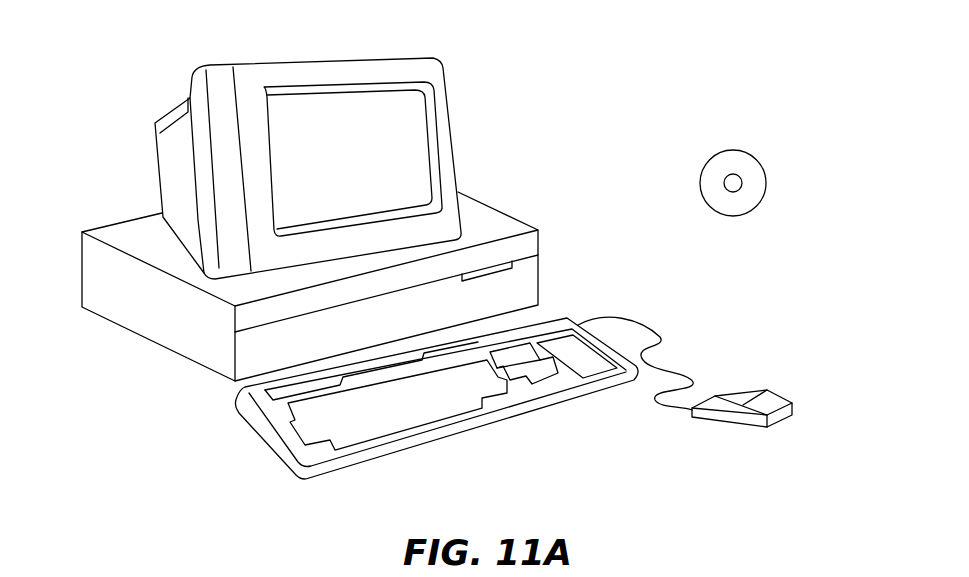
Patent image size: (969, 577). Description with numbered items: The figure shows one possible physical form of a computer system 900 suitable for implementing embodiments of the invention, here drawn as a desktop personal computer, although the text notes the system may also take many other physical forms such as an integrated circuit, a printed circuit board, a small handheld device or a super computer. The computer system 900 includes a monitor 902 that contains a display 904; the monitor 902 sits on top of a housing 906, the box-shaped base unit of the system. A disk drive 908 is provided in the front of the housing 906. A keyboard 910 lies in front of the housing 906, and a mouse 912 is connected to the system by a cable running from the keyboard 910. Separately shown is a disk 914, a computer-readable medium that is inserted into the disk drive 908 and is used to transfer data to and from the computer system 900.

The computer system 900 is at (657, 34).
The monitor 902 is at (457, 163).
The display 904 is at (416, 122).
The housing 906 is at (202, 363).
The disk drive 908 is at (512, 260).
The keyboard 910 is at (445, 438).
The mouse 912 is at (783, 398).
The disk 914 is at (750, 153).